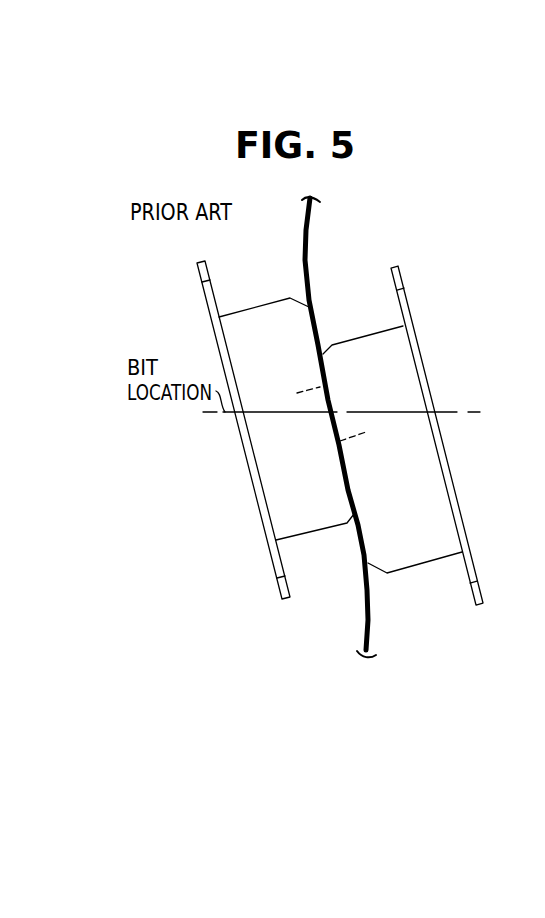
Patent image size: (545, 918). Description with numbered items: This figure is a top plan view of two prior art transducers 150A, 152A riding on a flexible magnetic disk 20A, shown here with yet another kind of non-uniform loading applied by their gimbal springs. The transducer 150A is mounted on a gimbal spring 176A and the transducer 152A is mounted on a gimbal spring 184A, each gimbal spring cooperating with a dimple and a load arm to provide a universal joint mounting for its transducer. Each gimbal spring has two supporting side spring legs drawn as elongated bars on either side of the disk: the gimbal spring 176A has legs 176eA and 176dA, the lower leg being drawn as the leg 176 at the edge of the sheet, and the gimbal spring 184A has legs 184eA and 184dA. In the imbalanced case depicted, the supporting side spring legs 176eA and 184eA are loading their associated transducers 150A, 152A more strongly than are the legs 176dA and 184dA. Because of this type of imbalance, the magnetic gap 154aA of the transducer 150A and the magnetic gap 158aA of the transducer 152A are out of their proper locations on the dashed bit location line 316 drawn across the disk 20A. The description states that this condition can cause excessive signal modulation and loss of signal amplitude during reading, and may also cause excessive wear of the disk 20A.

The flexible magnetic disk 20A is at (373, 427).
The gimbal spring 184A is at (226, 430).
The supporting side spring leg 184dA is at (196, 279).
The supporting side spring leg 184eA is at (281, 592).
The gimbal spring 176A is at (462, 435).
The supporting side spring leg 176eA is at (401, 281).
The lower end portion of supporting bar 176A (176dA) 176 is at (507, 606).
The supporting side spring leg 176dA is at (483, 600).
The transducer 152A is at (286, 392).
The magnetic gap 158aA is at (281, 361).
The transducer 150A is at (392, 424).
The magnetic gap 154aA is at (385, 464).
The bit location line 316 is at (377, 382).